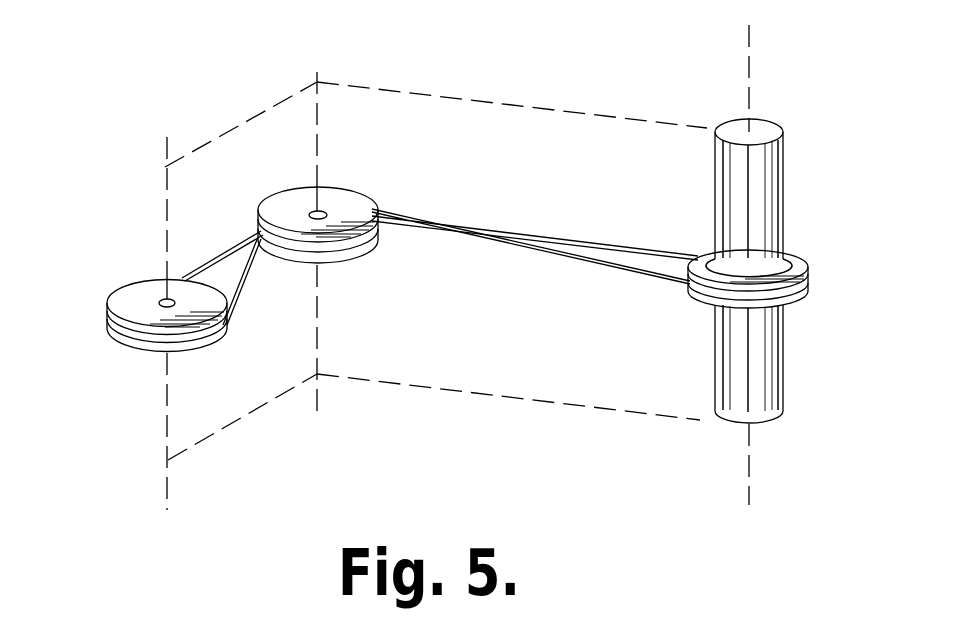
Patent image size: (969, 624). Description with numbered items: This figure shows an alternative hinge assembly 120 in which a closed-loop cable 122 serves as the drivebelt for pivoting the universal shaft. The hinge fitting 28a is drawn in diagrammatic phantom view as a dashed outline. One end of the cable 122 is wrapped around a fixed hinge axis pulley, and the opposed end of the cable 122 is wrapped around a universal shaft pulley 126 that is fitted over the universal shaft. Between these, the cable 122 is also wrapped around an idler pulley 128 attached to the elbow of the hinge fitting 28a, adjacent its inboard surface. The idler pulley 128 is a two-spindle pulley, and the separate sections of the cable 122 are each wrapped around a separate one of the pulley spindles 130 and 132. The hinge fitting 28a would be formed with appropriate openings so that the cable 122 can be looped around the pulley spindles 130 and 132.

The hinge assembly 120 is at (424, 56).
The hinge fitting 28a is at (558, 133).
The idler pulley 128 is at (128, 300).
The pulley spindle 130 is at (360, 260).
The pulley spindle 132 is at (380, 212).
The closed-loop cable 122 is at (582, 242).
The universal shaft pulley 126 is at (806, 268).